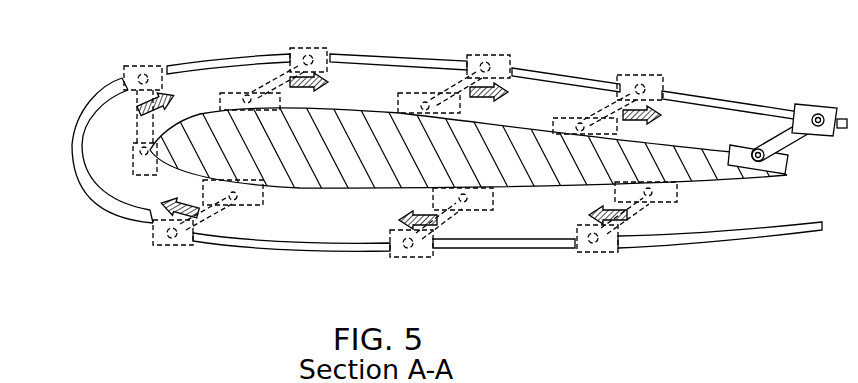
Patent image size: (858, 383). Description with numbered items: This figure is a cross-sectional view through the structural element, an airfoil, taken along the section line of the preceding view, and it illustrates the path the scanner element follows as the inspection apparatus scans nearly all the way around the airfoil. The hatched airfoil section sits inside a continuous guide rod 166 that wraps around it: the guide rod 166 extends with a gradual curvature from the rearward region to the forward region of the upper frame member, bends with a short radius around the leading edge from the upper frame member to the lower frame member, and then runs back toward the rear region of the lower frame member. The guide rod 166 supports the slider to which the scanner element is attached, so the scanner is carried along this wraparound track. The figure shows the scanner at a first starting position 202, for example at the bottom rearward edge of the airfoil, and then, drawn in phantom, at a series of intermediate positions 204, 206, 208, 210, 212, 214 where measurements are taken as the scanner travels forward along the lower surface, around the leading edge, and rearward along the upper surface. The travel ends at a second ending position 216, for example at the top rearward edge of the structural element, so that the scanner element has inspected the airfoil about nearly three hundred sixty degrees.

The continuous guide rod 166 is at (138, 228).
The first starting position 202 is at (605, 253).
The intermediate position 204 is at (428, 256).
The intermediate position 206 is at (175, 246).
The intermediate position 208 is at (142, 65).
The intermediate position 210 is at (303, 48).
The intermediate position 212 is at (483, 55).
The intermediate position 214 is at (645, 75).
The second ending position 216 is at (820, 106).